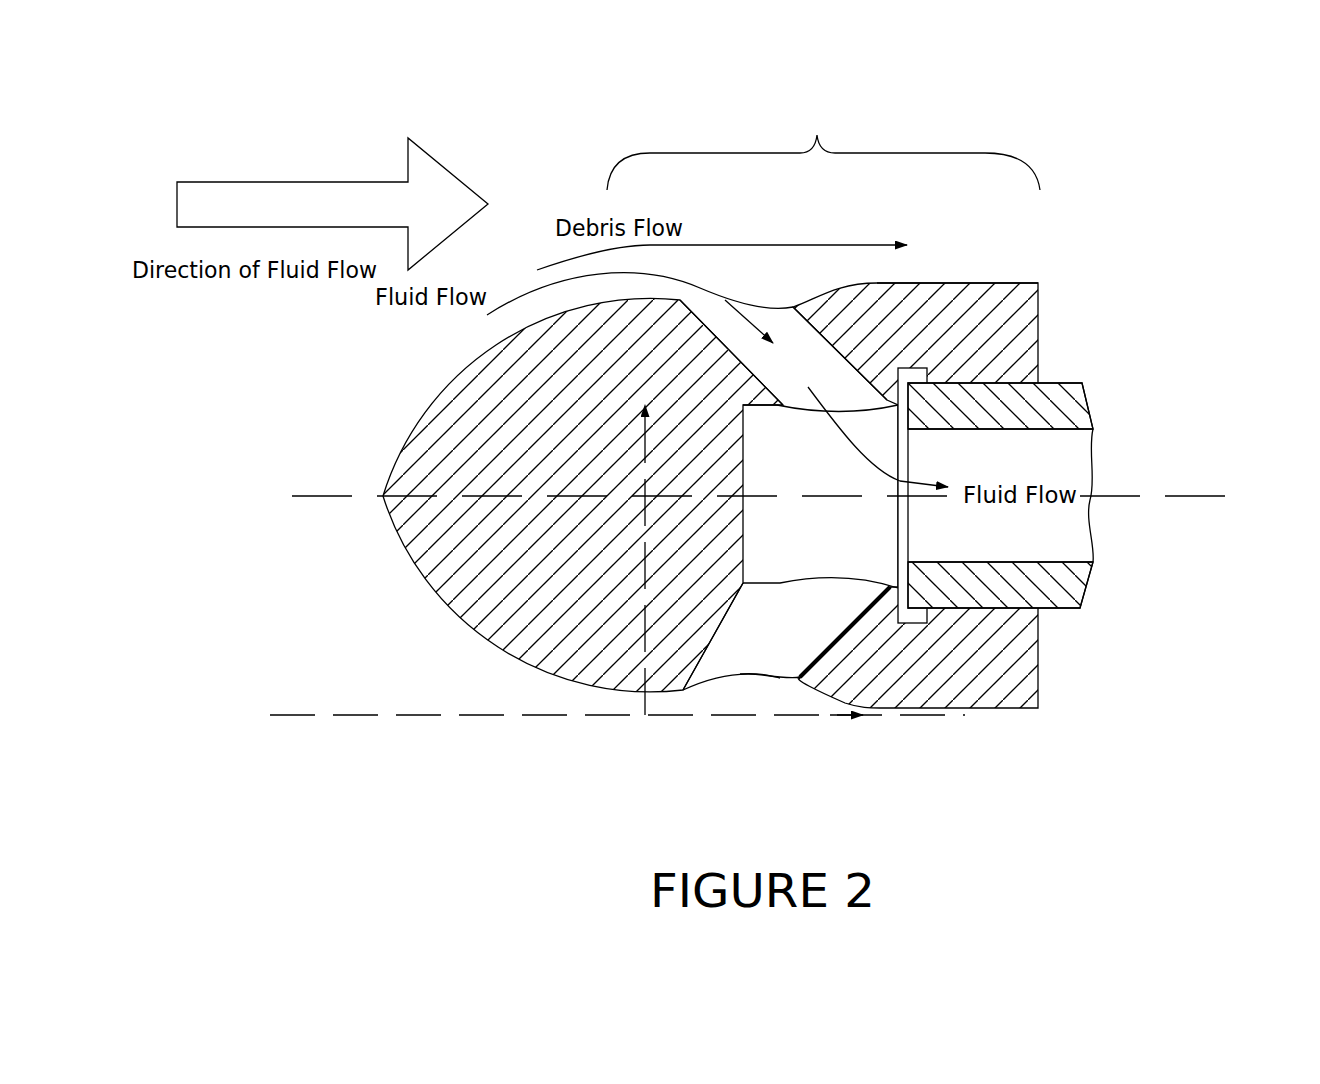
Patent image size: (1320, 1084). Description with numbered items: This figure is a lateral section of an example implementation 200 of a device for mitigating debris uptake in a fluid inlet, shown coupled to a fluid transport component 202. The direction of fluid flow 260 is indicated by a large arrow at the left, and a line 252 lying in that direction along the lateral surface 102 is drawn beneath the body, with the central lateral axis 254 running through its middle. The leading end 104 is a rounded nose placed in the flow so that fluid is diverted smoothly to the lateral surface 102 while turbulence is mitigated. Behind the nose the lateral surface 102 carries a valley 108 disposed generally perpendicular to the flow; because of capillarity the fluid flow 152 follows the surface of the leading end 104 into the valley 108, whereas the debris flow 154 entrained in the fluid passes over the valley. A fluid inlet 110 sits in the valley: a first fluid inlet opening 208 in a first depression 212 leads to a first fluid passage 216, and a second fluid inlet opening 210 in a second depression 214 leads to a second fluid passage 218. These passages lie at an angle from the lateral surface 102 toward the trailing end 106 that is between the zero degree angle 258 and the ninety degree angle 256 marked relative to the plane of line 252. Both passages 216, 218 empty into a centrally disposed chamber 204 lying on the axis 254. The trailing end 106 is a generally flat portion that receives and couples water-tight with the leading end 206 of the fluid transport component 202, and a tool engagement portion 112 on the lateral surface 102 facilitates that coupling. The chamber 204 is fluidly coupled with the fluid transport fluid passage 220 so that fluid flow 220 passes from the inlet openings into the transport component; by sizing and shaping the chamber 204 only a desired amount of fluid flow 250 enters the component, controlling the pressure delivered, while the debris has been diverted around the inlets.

The lateral surface 102 is at (823, 147).
The leading end 104 is at (392, 420).
The trailing end 106 is at (1038, 315).
The valley 108 is at (733, 290).
The fluid inlet 110 is at (780, 307).
The tool engagement portion 112 is at (930, 282).
The fluid flow 152 is at (470, 325).
The debris flow 154 is at (557, 263).
The example implementation 200 is at (1120, 153).
The fluid transport component 202 is at (1083, 420).
The chamber 204 is at (842, 548).
The leading end of the fluid transport component 206 is at (898, 405).
The first fluid inlet opening 208 is at (797, 303).
The second fluid inlet opening 210 is at (763, 677).
The first depression 212 is at (792, 277).
The second depression 214 is at (718, 688).
The first fluid passage 216 is at (817, 372).
The second fluid passage 218 is at (819, 628).
The fluid transport fluid passage 220 is at (1020, 467).
The fluid flow into the fluid transport component 250 is at (857, 479).
The line in the direction of fluid flow 252 is at (497, 715).
The central lateral axis 254 is at (330, 496).
The ninety degree angle 256 is at (645, 607).
The zero degree angle 258 is at (850, 716).
The direction of fluid flow 260 is at (318, 182).